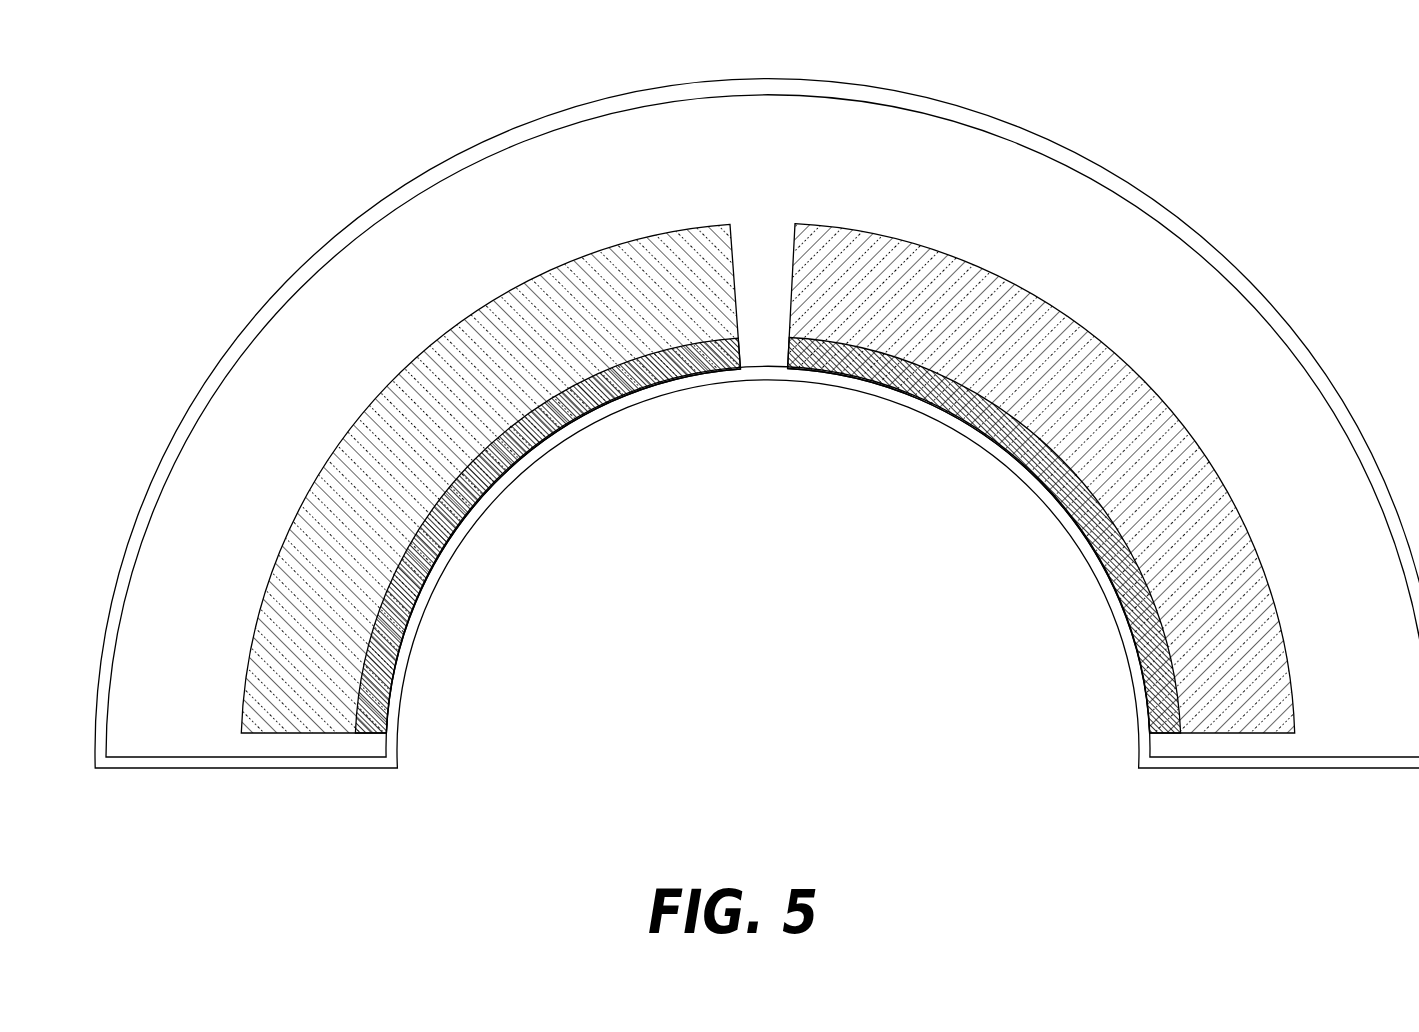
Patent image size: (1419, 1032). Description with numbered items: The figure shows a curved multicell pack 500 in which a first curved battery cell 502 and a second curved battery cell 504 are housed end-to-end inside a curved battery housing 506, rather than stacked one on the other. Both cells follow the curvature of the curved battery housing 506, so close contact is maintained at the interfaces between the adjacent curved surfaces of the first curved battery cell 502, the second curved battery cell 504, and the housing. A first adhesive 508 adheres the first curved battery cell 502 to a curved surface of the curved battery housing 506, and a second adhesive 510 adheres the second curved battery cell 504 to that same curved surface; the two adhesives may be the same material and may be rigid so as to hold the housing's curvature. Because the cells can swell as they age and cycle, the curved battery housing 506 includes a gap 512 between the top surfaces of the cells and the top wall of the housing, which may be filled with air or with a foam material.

The curved multicell pack 500 is at (765, 47).
The first curved battery cell 502 is at (284, 727).
The second curved battery cell 504 is at (1250, 712).
The curved battery housing 506 is at (1318, 368).
The first adhesive 508 is at (423, 587).
The second adhesive 510 is at (1110, 582).
The gap 512 is at (572, 210).